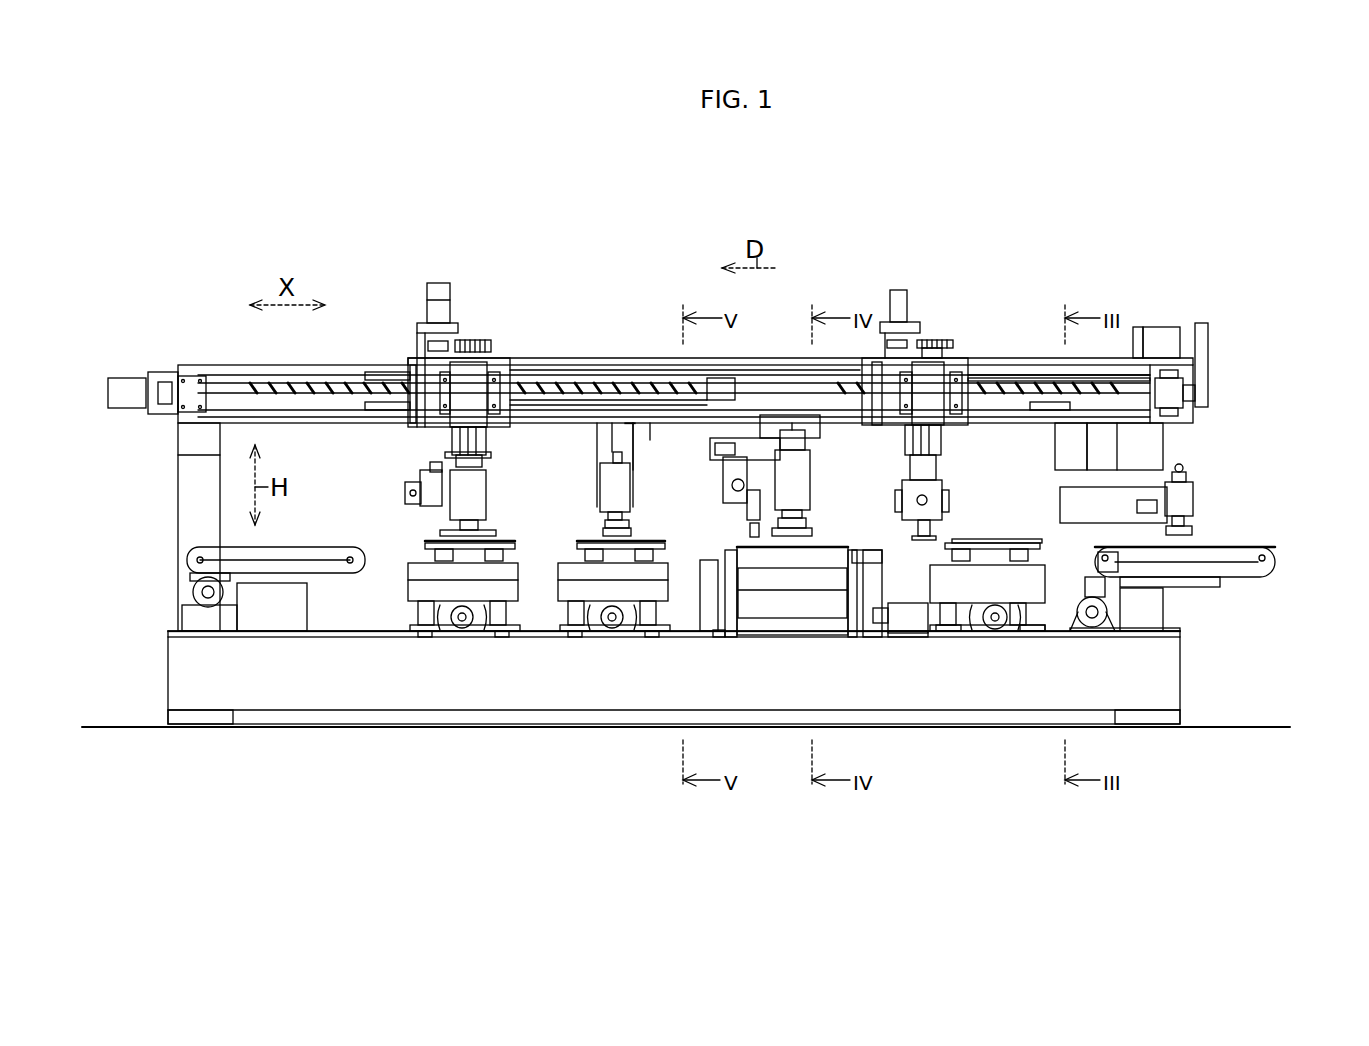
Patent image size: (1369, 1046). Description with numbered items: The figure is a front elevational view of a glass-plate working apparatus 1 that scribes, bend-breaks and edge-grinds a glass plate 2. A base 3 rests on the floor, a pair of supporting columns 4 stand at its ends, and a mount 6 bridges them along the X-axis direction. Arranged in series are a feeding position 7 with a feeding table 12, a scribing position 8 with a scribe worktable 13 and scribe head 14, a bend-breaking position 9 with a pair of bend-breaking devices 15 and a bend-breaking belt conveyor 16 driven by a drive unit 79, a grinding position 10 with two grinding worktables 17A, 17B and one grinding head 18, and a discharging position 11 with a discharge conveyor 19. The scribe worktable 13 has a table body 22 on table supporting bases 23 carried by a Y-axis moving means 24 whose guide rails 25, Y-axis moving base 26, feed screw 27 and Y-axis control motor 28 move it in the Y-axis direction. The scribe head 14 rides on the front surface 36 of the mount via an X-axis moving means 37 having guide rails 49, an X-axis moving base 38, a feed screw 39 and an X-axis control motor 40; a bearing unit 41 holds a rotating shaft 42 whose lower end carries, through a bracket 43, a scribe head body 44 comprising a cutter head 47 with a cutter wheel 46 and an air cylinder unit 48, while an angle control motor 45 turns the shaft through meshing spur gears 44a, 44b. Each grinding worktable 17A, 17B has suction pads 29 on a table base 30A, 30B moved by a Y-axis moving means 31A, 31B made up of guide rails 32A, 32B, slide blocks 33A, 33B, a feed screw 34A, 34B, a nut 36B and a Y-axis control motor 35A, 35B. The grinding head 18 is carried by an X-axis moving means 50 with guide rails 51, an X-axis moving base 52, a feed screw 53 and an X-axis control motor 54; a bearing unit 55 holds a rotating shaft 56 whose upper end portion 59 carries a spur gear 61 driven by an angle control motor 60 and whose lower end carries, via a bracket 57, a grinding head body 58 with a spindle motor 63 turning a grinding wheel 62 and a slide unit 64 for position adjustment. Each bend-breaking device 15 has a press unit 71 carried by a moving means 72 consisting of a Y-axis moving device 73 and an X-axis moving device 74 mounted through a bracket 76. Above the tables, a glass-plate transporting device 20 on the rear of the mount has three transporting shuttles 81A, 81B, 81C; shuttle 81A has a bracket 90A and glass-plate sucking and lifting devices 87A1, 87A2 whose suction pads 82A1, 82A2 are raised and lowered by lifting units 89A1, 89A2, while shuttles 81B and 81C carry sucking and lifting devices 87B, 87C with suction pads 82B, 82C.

The glass-plate working apparatus 1 is at (1210, 325).
The glass plate 2 is at (500, 543).
The base 3 is at (1160, 690).
The supporting columns 4 is at (198, 490).
The mount 6 is at (530, 380).
The feeding position 7 is at (1220, 545).
The scribing position 8 is at (970, 534).
The bend-breaking position 9 is at (790, 565).
The grinding position 10 is at (560, 598).
The discharging position 11 is at (252, 555).
The feeding table 12 is at (1180, 560).
The scribe worktable 13 is at (990, 605).
The scribe head 14 is at (895, 605).
The bend-breaking devices 15 is at (650, 410).
The bend-breaking belt conveyor 16 is at (740, 600).
The grinding worktable 17A is at (612, 617).
The grinding worktable 17B is at (455, 608).
The grinding head 18 is at (420, 498).
The discharge conveyor 19 is at (192, 560).
The glass-plate transporting device 20 is at (430, 395).
The table body 22 is at (1060, 618).
The table supporting bases 23 is at (948, 605).
The Y-axis moving means 24 is at (1122, 632).
The guide rails 25 is at (962, 620).
The Y-axis moving base 26 is at (985, 625).
The feed screw 27 is at (1010, 605).
The Y-axis control motor 28 is at (1035, 625).
The suction pads 29 is at (440, 553).
The table base 30A is at (640, 635).
The table base 30B is at (410, 565).
The Y-axis moving means 31A is at (590, 635).
The Y-axis moving means 31B is at (470, 635).
The guide rails 32A is at (575, 603).
The guide rails 32B is at (425, 603).
The slide blocks 33A is at (670, 590).
The slide blocks 33B is at (510, 590).
The feed screw 34A is at (650, 607).
The feed screw 34B is at (495, 605).
The Y-axis control motor 35A is at (595, 627).
The Y-axis control motor 35B is at (490, 540).
The front surface 36 is at (225, 375).
The nut 36B is at (470, 627).
The X-axis moving means 37 is at (978, 395).
The X-axis moving base 38 is at (878, 340).
The feed screw 39 is at (1028, 420).
The X-axis control motor 40 is at (1160, 332).
The bearing unit 41 is at (930, 380).
The rotating shaft 42 is at (945, 375).
The bracket 43 is at (928, 478).
The scribe head body 44 is at (895, 350).
The spur gear 44a is at (918, 345).
The spur gear 44b is at (935, 350).
The angle control motor 45 is at (900, 325).
The cutter wheel 46 is at (935, 525).
The cutter head 47 is at (935, 510).
The air cylinder unit 48 is at (930, 490).
The guide rails 49 is at (1015, 380).
The X-axis moving means 50 is at (540, 395).
The guide rails 51 is at (370, 406).
The X-axis moving base 52 is at (500, 360).
The feed screw 53 is at (284, 385).
The X-axis control motor 54 is at (135, 385).
The bearing unit 55 is at (482, 375).
The rotating shaft 56 is at (484, 440).
The bracket 57 is at (450, 470).
The grinding head body 58 is at (450, 454).
The upper end portion 59 is at (478, 350).
The angle control motor 60 is at (438, 305).
The spur gear 61 is at (462, 330).
The grinding wheel 62 is at (455, 535).
The spindle motor 63 is at (470, 497).
The slide unit 64 is at (430, 486).
The press unit 71 is at (750, 530).
The moving means 72 is at (735, 470).
The Y-axis moving device 73 is at (630, 470).
The X-axis moving device 74 is at (735, 443).
The bracket 76 is at (795, 460).
The drive unit 79 is at (905, 633).
The transporting shuttle 81A is at (1070, 440).
The transporting shuttle 81B is at (795, 480).
The transporting shuttle 81C is at (590, 390).
The suction pads 82A1 is at (1185, 532).
The suction pads 82A2 is at (1147, 473).
The suction pads 82B is at (805, 530).
The suction pads 82C is at (625, 530).
The glass-plate sucking and lifting device 87A1 is at (1183, 478).
The glass-plate sucking and lifting device 87A2 is at (1020, 483).
The glass-plate sucking and lifting device 87B is at (800, 450).
The glass-plate sucking and lifting device 87C is at (612, 450).
The lifting unit 89A1 is at (1180, 490).
The lifting unit 89A2 is at (1063, 480).
The bracket 90A is at (1120, 490).